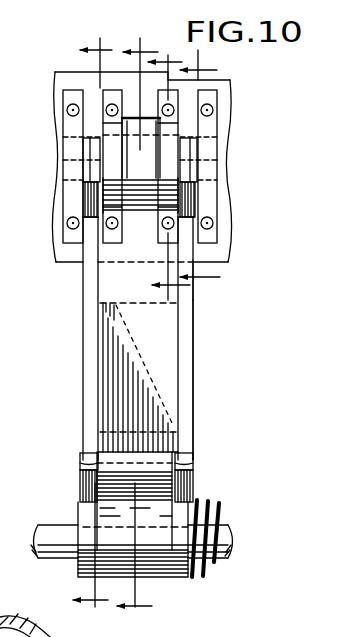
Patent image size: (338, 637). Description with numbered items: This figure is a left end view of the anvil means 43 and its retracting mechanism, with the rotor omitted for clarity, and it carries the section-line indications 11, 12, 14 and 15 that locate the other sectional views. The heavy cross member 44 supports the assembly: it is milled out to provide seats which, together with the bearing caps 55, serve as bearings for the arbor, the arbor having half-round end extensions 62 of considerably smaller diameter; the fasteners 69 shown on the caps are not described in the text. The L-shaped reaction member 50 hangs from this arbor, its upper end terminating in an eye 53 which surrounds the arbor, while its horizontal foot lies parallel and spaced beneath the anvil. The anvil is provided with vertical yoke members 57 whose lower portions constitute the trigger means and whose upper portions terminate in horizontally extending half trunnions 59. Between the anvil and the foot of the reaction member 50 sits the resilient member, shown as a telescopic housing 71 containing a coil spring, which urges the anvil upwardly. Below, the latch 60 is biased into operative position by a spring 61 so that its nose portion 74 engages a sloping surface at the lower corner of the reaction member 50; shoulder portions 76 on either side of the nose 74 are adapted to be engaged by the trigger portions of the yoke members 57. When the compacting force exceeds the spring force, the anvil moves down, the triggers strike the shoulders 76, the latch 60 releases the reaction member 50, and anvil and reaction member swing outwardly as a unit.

The section line 11 is at (137, 326).
The section line 12 is at (92, 326).
The section line 14 is at (168, 173).
The section line 15 is at (203, 175).
The anvil means 43 is at (198, 397).
The cross member 44 is at (218, 250).
The reaction member 50 is at (157, 325).
The eye 53 is at (147, 208).
The bearing caps 55 is at (110, 88).
The yoke members 57 is at (83, 335).
The half trunnions 59 is at (90, 136).
The latch 60 is at (112, 515).
The spring 61 is at (217, 510).
The end extensions 62 is at (88, 158).
The bolts 69 is at (72, 97).
The telescopic housing 71 is at (233, 540).
The nose portion 74 is at (117, 480).
The shoulder portions 76 is at (82, 470).